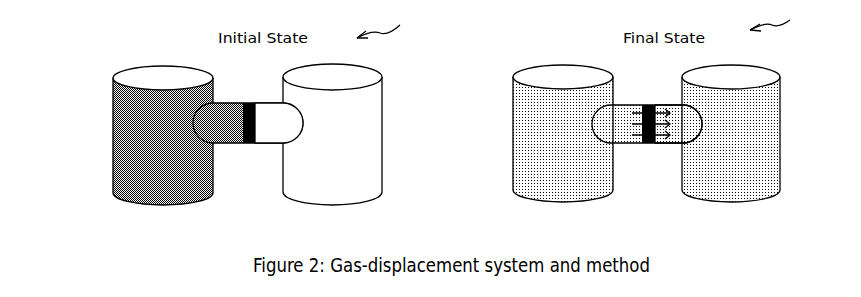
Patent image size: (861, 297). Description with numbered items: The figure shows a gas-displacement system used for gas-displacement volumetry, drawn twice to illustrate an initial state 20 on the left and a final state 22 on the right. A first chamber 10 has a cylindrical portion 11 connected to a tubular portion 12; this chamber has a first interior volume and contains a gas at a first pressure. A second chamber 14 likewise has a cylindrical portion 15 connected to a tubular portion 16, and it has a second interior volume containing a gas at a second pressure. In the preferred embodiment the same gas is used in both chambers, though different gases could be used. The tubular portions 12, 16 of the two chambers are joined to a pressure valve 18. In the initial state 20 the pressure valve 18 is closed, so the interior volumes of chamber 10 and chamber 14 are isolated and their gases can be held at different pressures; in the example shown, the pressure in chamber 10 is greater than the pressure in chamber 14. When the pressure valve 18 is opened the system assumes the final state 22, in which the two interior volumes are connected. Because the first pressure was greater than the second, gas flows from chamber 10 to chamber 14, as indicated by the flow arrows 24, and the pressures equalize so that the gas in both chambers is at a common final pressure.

The chamber 10 is at (430, 168).
The cylindrical portion 11 is at (113, 130).
The tubular portion 12 is at (447, 155).
The chamber 14 is at (558, 163).
The cylindrical portion 15 is at (383, 134).
The tubular portion 16 is at (262, 145).
The pressure valve 18 is at (243, 102).
The initial state 20 is at (391, 24).
The final state 22 is at (783, 19).
The gas flow 24 is at (652, 103).